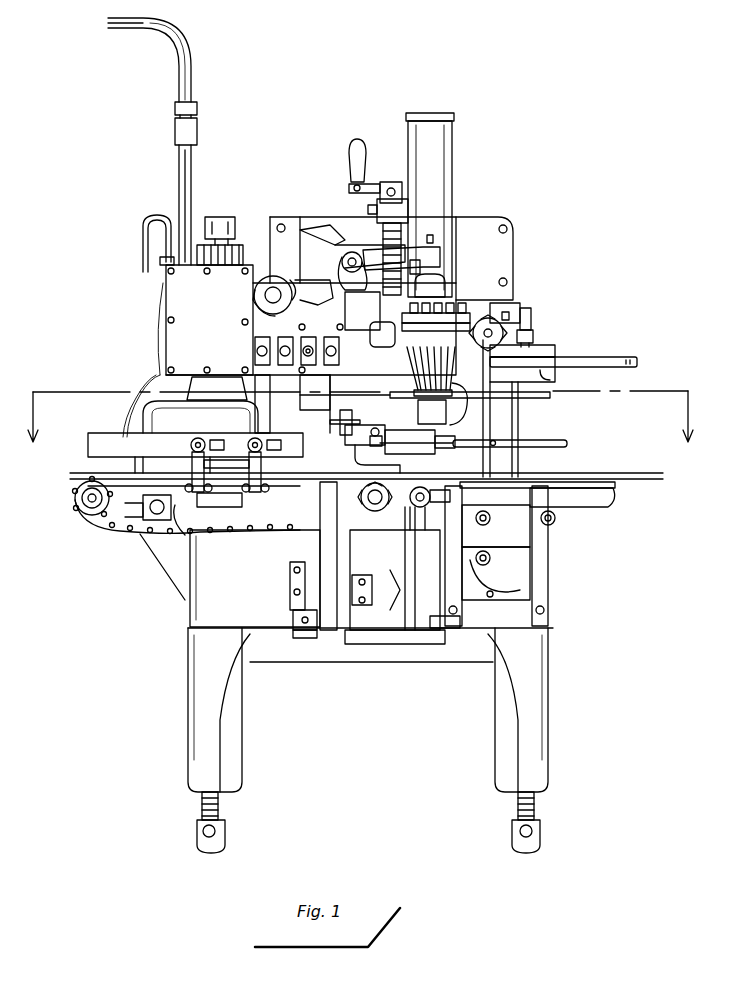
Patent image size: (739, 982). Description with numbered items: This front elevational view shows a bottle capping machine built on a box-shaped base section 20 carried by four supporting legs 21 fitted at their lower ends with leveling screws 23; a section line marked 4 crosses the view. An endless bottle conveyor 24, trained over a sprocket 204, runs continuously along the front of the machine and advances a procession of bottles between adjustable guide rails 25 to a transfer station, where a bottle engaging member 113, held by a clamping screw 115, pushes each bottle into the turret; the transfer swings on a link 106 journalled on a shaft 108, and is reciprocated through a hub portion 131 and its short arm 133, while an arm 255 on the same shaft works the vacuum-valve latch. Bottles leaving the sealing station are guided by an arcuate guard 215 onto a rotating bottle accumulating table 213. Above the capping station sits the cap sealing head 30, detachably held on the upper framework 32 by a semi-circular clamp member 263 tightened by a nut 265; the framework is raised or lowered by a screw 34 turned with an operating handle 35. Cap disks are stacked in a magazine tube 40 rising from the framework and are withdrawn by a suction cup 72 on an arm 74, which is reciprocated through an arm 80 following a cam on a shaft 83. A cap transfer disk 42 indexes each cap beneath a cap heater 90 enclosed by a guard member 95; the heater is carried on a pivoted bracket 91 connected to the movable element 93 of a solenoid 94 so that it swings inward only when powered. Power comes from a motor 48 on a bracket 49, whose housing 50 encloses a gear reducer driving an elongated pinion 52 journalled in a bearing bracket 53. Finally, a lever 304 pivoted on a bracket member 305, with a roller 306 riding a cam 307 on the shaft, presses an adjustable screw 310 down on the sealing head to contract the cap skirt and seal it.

The section line 4- 4 is at (359, 434).
The base section 20 is at (263, 556).
The supporting legs 21 is at (198, 663).
The leveling screws 23 is at (219, 813).
The endless bottle conveyor 24 is at (120, 531).
The adjustable guide rails 25 is at (118, 425).
The cap sealing head 30 is at (470, 303).
The upper framework 32 is at (374, 310).
The screw 34 is at (383, 240).
The operating handle 35 is at (349, 152).
The magazine tube 40 is at (453, 142).
The cap transfer disk 42 is at (543, 399).
The motor 48 is at (158, 385).
The bracket 49 is at (168, 571).
The housing 50 is at (200, 405).
The elongated pinion 52 is at (238, 245).
The bearing bracket 53 is at (222, 217).
The suction cup 72 is at (436, 374).
The arm 74 is at (420, 442).
The arm 80 is at (320, 292).
The shaft 83 is at (254, 294).
The cap heater 90 is at (552, 352).
The bracket 91 is at (531, 338).
The movable element 93 is at (510, 313).
The solenoid 94 is at (528, 317).
The guard member 95 is at (598, 358).
The link 106 is at (402, 540).
The shaft 108 is at (330, 638).
The bottle engaging member 113 is at (339, 416).
The clamping screw 115 is at (345, 440).
The hub portion 131 is at (378, 645).
The short arm 133 is at (392, 568).
The sprocket 204 is at (400, 518).
The bottle accumulating table 213 is at (610, 473).
The arcuate guard 215 is at (565, 441).
The arm 255 is at (292, 606).
The clamp member 263 is at (405, 337).
The nut 265 is at (472, 333).
The lever 304 is at (335, 245).
The bracket member 305 is at (362, 263).
The roller 306 is at (280, 250).
The cam 307 is at (267, 300).
The adjustable screw 310 is at (438, 272).